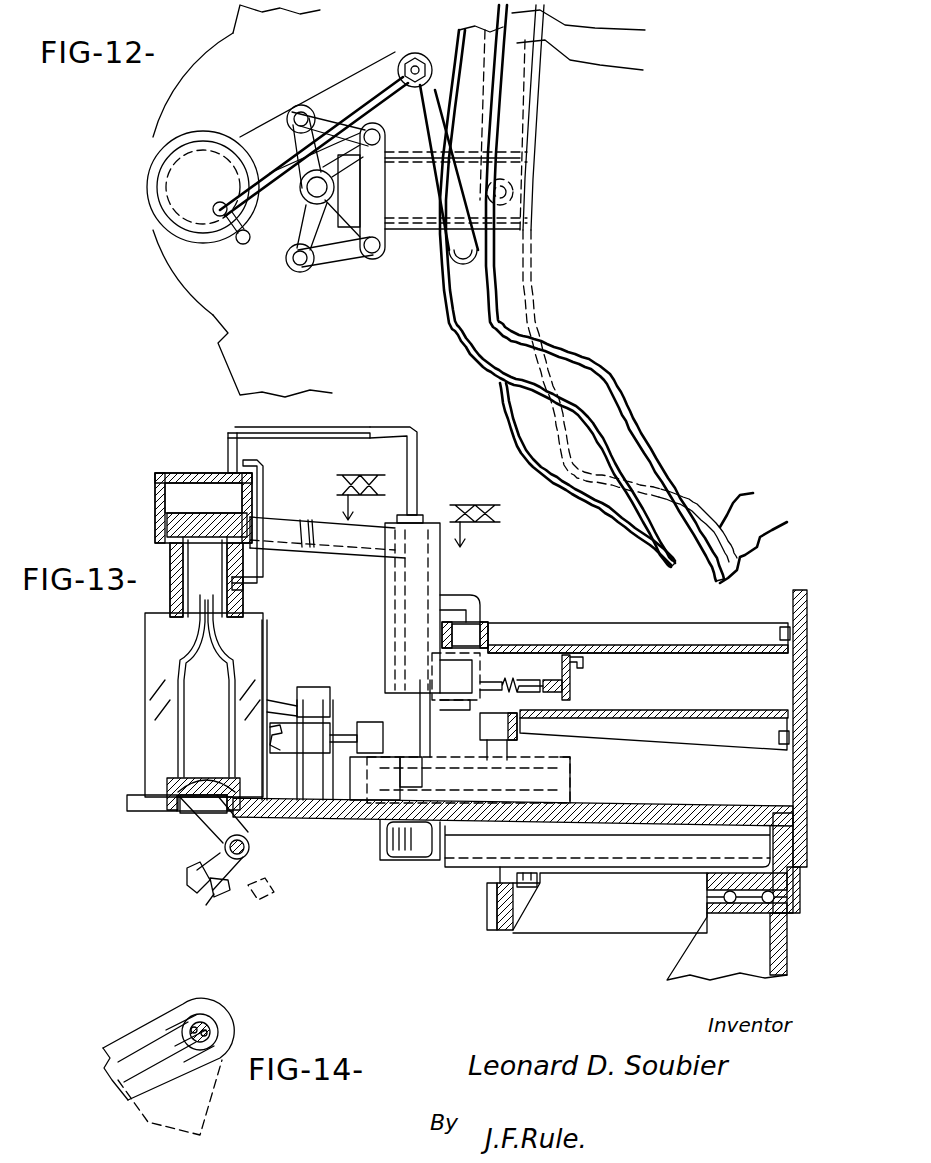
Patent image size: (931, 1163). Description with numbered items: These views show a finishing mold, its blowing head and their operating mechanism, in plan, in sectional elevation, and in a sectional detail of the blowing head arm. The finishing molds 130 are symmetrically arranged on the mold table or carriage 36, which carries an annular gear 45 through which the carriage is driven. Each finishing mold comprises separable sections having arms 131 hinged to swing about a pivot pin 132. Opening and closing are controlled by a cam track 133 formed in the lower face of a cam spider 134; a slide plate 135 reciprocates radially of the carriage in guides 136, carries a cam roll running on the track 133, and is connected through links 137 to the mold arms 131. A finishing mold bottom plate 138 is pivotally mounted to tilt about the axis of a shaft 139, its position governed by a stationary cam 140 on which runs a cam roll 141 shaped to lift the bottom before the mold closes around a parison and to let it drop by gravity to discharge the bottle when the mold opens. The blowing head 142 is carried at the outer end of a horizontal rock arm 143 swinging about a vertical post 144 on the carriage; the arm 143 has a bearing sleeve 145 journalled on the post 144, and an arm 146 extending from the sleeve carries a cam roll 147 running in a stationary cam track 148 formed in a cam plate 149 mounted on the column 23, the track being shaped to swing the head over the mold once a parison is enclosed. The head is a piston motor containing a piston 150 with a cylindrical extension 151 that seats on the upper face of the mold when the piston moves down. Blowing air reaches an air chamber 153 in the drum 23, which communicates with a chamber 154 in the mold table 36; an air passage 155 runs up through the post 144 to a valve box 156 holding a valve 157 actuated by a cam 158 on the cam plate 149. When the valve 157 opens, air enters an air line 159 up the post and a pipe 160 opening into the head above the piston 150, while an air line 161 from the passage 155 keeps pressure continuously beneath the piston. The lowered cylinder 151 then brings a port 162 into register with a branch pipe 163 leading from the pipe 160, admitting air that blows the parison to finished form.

In FIG. 13, the column 23 is at (793, 601).
In FIG. 12, the finishing mold carriage 36 is at (213, 315).
In FIG. 13, the finishing mold carriage 36 is at (362, 822).
In FIG. 13, the annular gear 45 is at (487, 915).
In FIG. 12, the finishing mold 130 is at (158, 214).
In FIG. 13, the finishing mold 130 is at (145, 650).
In FIG. 12, the mold arms 131 is at (290, 265).
In FIG. 13, the mold arms 131 is at (270, 700).
In FIG. 12, the pivot pin 132 is at (302, 206).
In FIG. 13, the pivot pin 132 is at (313, 687).
In FIG. 12, the cam track 133 is at (499, 22).
In FIG. 13, the cam track 133 is at (512, 735).
In FIG. 12, the cam spider 134 is at (600, 18).
In FIG. 13, the cam spider 134 is at (718, 712).
In FIG. 12, the slide plate 135 is at (355, 228).
In FIG. 13, the slide plate 135 is at (363, 790).
In FIG. 12, the guides 136 is at (392, 243).
In FIG. 13, the guides 136 is at (570, 790).
In FIG. 12, the links 137 is at (312, 274).
In FIG. 13, the links 137 is at (332, 730).
In FIG. 13, the finishing mold bottom plate 138 is at (167, 785).
In FIG. 13, the shaft 139 is at (249, 847).
In FIG. 13, the stationary cam 140 is at (214, 896).
In FIG. 13, the cam roll 141 is at (190, 872).
In FIG. 12, the blowing head 142 is at (160, 163).
In FIG. 13, the blowing head 142 is at (155, 478).
In FIG. 12, the rock arm 143 is at (338, 87).
In FIG. 13, the rock arm 143 is at (325, 520).
In FIG. 14, the rock arm 143 is at (115, 1052).
In FIG. 13, the vertical post 144 is at (390, 700).
In FIG. 13, the bearing sleeve 145 is at (440, 578).
In FIG. 12, the arm 146 is at (436, 180).
In FIG. 13, the arm 146 is at (450, 598).
In FIG. 12, the cam roll 147 is at (455, 272).
In FIG. 13, the cam roll 147 is at (480, 626).
In FIG. 12, the cam track 148 is at (459, 30).
In FIG. 13, the cam track 148 is at (488, 636).
In FIG. 12, the cam plate 149 is at (604, 70).
In FIG. 13, the cam plate 149 is at (704, 620).
In FIG. 13, the piston 150 is at (167, 522).
In FIG. 13, the cylindrical extension 151 is at (232, 604).
In FIG. 13, the air chamber 153 is at (782, 826).
In FIG. 13, the chamber 154 is at (415, 857).
In FIG. 13, the air passage 155 is at (425, 740).
In FIG. 13, the valve box 156 is at (468, 712).
In FIG. 13, the valve 157 is at (466, 680).
In FIG. 13, the cam 158 is at (562, 685).
In FIG. 13, the air line 159 is at (395, 645).
In FIG. 14, the air line 159 is at (218, 1033).
In FIG. 12, the pipe 160 is at (398, 62).
In FIG. 13, the pipe 160 is at (417, 478).
In FIG. 13, the air line 161 is at (352, 560).
In FIG. 14, the air line 161 is at (163, 1028).
In FIG. 13, the port 162 is at (243, 584).
In FIG. 12, the branch pipe 163 is at (243, 244).
In FIG. 13, the branch pipe 163 is at (263, 500).